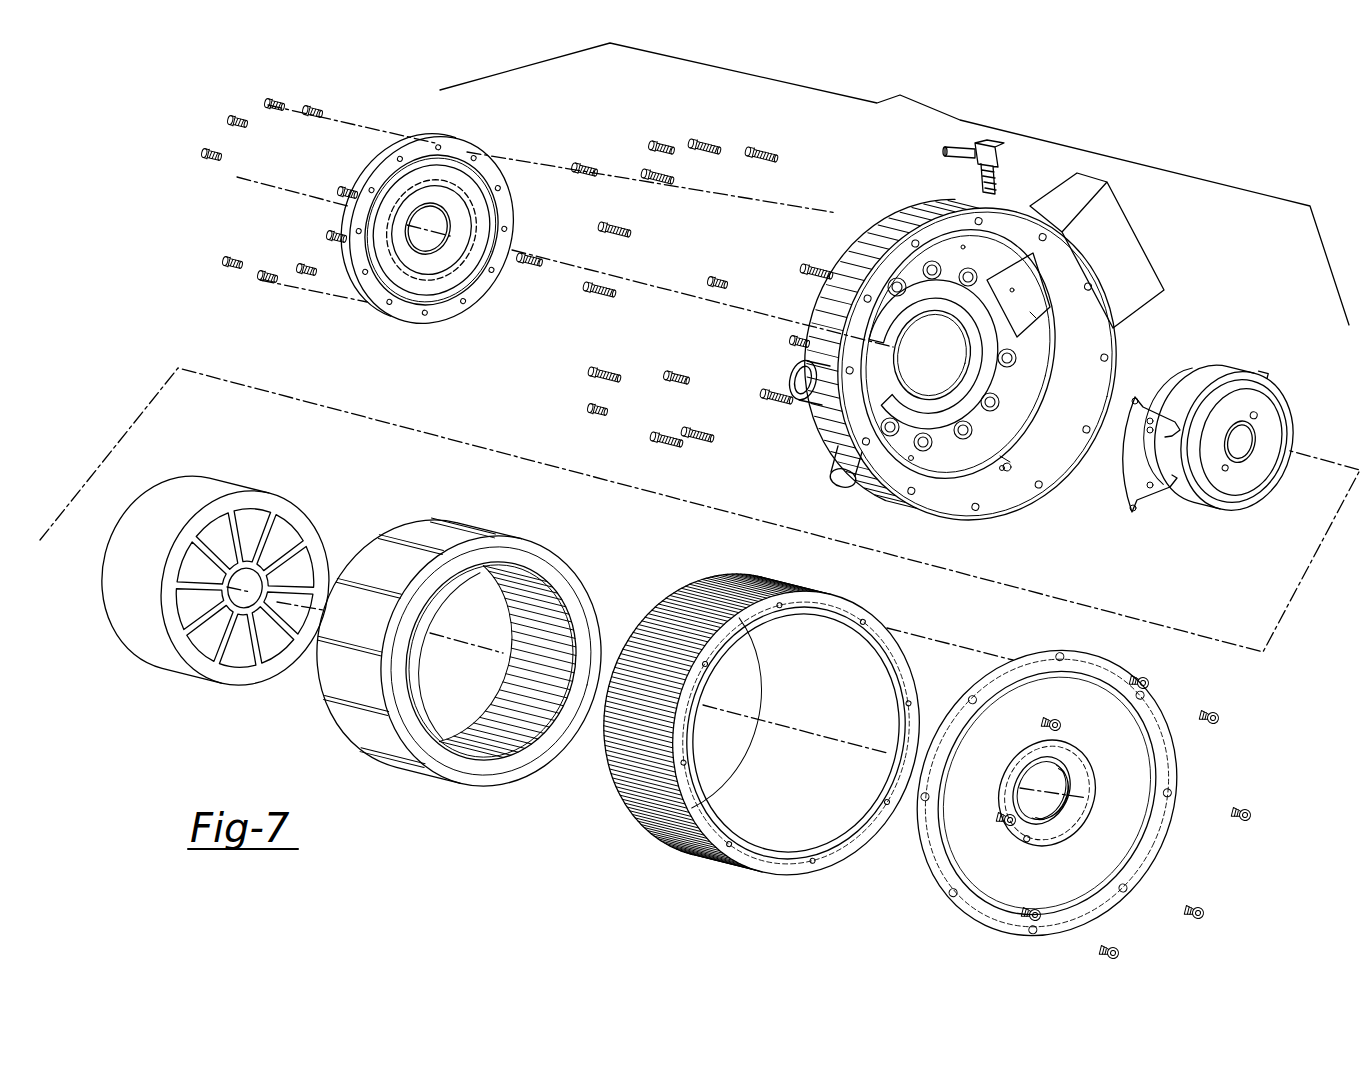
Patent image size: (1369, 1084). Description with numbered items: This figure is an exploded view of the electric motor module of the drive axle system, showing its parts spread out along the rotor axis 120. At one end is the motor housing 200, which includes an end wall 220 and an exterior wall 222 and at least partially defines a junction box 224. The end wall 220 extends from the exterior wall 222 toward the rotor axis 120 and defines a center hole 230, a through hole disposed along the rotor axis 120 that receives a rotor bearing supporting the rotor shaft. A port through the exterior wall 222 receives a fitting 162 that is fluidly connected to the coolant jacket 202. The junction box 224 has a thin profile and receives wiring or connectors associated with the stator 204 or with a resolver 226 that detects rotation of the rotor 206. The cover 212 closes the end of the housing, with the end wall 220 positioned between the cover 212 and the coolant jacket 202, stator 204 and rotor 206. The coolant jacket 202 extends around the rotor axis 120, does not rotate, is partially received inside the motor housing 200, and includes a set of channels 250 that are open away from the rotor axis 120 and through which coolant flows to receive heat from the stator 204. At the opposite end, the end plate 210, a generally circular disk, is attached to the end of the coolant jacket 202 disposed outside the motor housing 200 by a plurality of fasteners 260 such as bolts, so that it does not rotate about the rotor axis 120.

The rotor axis 120 is at (1087, 806).
The fitting 162 is at (952, 157).
The motor housing 200 is at (960, 353).
The coolant jacket 202 is at (755, 739).
The stator 204 is at (403, 771).
The rotor 206 is at (183, 688).
The end plate 210 is at (1093, 815).
The cover 212 is at (467, 140).
The end wall 220 is at (934, 473).
The exterior wall 222 is at (1093, 478).
The junction box 224 is at (1142, 306).
The resolver 226 is at (1249, 517).
The center hole 230 is at (919, 356).
The channels 250 is at (727, 858).
The fasteners 260 is at (1137, 686).